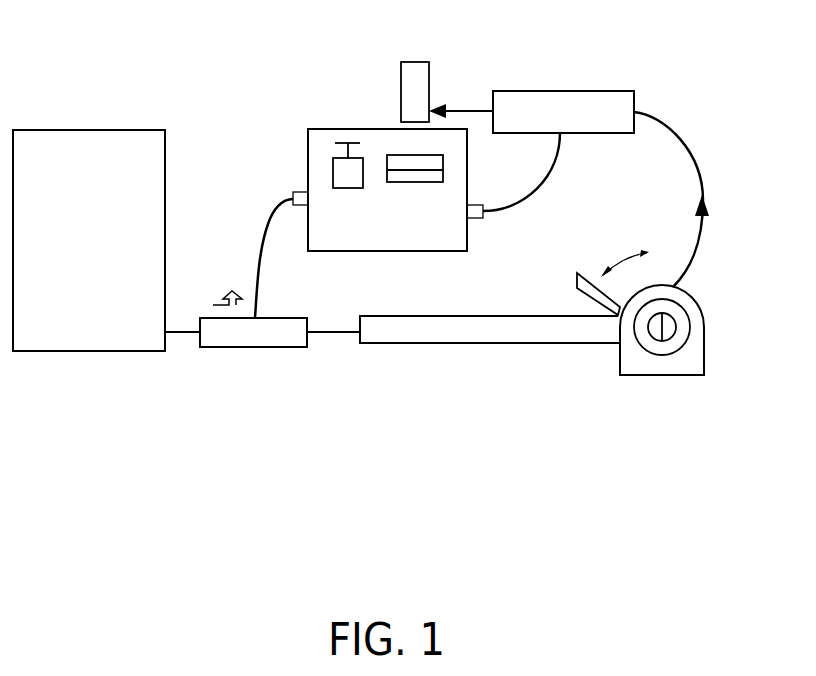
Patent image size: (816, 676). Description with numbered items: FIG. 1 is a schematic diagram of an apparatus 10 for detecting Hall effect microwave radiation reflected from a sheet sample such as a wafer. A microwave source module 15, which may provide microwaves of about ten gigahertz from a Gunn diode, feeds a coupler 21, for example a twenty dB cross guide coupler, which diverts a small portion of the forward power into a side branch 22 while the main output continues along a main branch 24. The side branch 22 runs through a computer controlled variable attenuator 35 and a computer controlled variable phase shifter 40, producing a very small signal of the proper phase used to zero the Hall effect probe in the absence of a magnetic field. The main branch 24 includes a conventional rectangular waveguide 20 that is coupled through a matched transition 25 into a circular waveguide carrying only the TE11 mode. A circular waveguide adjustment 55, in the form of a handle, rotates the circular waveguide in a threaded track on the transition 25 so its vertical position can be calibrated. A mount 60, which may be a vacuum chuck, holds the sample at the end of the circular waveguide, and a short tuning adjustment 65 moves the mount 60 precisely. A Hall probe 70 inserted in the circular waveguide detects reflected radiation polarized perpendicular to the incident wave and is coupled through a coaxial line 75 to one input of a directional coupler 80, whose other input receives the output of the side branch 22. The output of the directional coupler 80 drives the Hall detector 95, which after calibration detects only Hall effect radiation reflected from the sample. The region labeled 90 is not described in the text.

The apparatus 10 is at (666, 76).
The microwave source module 15 is at (72, 130).
The conventional rectangular waveguide 20 is at (428, 345).
The coupler 21 is at (245, 349).
The side branch 22 is at (262, 268).
The main branch 24 is at (512, 316).
The transition 25 is at (705, 338).
The variable attenuator 35 is at (329, 131).
The variable phase shifter 40 is at (416, 192).
The circular waveguide adjustment 55 is at (582, 313).
The mount 60 is at (675, 340).
The short tuning adjustment 65 is at (652, 356).
The Hall probe 70 is at (688, 280).
The coaxial line 75 is at (697, 153).
The directional coupler 80 is at (567, 91).
The free space 90 is at (552, 212).
The Hall detector 95 is at (401, 93).